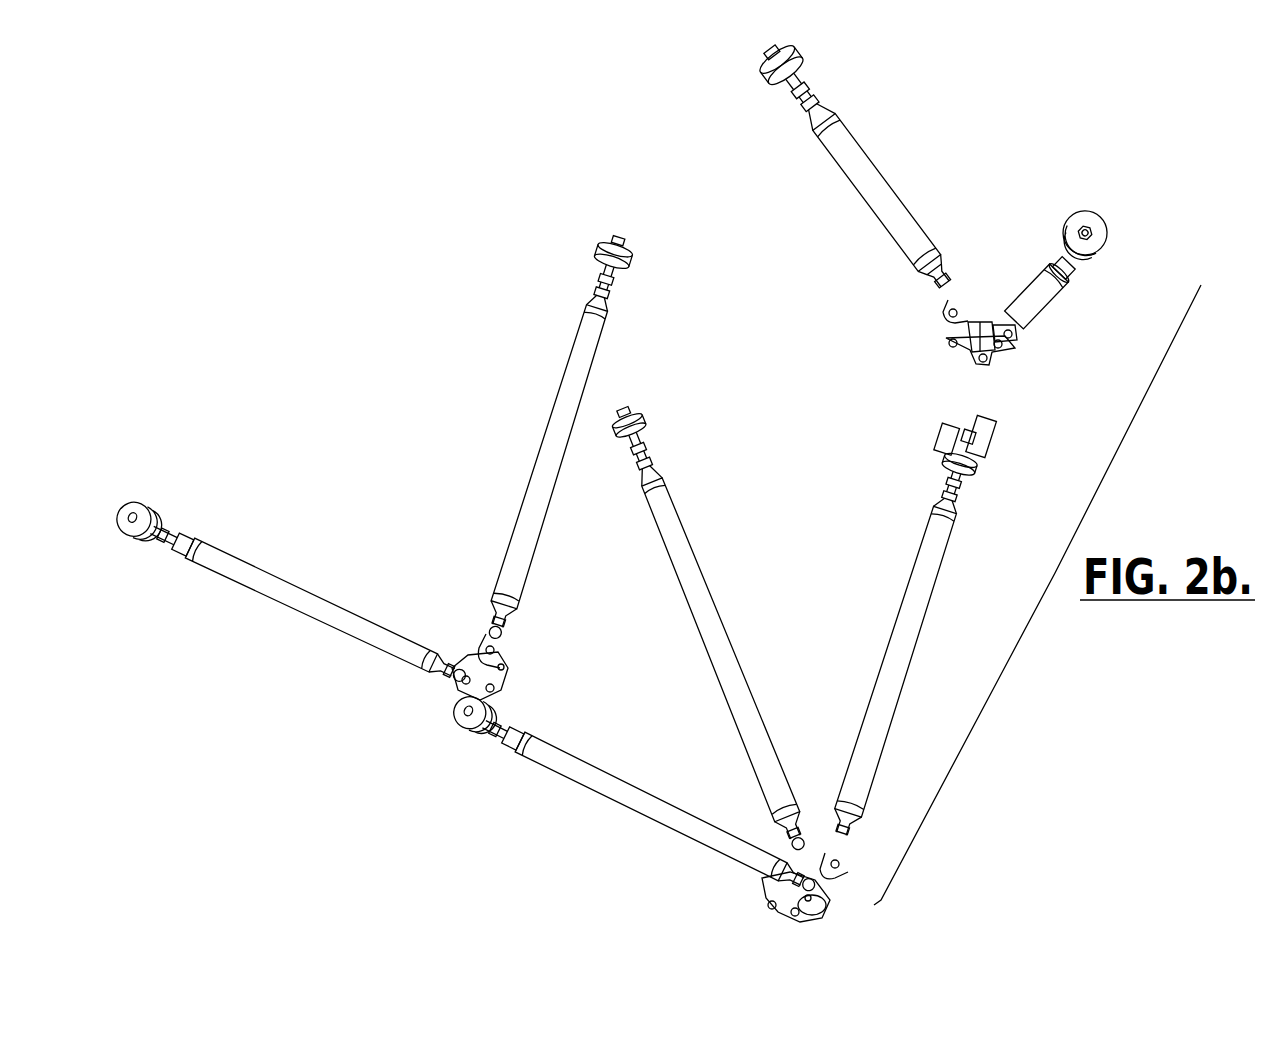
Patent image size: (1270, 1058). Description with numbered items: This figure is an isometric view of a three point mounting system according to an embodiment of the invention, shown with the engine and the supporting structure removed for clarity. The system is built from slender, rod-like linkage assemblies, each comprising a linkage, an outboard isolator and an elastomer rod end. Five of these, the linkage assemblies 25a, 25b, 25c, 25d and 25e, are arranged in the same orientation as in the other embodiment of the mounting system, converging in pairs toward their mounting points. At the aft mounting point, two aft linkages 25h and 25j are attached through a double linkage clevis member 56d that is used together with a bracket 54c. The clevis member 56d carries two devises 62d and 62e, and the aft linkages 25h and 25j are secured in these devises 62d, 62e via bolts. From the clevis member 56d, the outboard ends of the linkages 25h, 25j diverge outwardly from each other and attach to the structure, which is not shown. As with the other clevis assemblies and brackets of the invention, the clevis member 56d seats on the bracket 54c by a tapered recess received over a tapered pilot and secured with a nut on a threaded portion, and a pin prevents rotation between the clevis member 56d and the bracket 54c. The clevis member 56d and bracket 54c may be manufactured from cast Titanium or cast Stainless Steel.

The linkage assembly 25a is at (292, 617).
The linkage assembly 25b is at (528, 470).
The linkage assembly 25c is at (580, 794).
The linkage assembly 25d is at (688, 613).
The linkage assembly 25e is at (921, 641).
The aft linkage 25h is at (1053, 300).
The aft linkage 25j is at (858, 203).
The bracket 54c is at (990, 360).
The double linkage clevis member 56d is at (975, 337).
The devise 62d is at (948, 310).
The devise 62e is at (1016, 334).